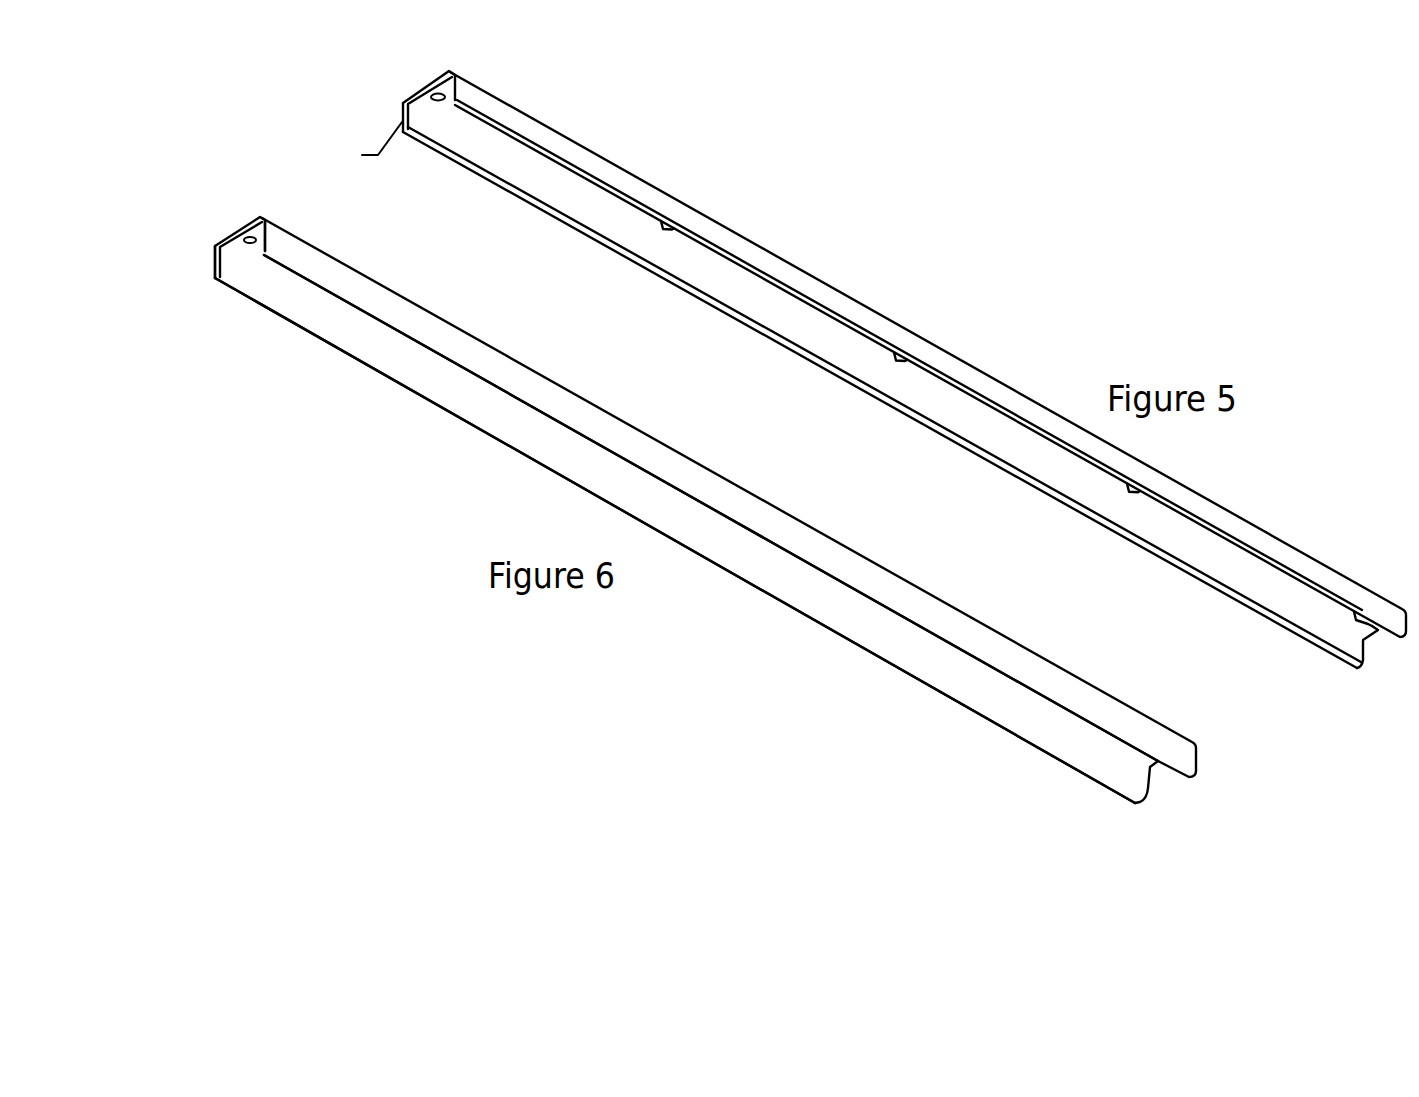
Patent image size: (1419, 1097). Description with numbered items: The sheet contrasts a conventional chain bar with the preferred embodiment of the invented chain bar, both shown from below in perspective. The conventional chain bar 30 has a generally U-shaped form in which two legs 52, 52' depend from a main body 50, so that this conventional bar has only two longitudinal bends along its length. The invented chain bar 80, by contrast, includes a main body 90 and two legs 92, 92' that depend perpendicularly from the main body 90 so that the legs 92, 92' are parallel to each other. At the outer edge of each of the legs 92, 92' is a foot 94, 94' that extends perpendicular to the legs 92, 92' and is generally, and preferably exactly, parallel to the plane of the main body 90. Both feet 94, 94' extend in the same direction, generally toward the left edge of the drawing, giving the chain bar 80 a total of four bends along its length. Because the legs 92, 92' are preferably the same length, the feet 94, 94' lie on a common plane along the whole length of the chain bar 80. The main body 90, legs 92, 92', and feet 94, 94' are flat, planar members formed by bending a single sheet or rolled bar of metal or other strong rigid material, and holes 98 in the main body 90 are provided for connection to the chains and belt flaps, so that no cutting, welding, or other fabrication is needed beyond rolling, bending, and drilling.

In FIG. 5, the conventional chain bar 30 is at (910, 310).
In FIG. 5, the main body 50 is at (422, 80).
In FIG. 5, the leg 52 is at (517, 78).
In FIG. 5, the leg 52' is at (347, 108).
In FIG. 6, the chain bar 80 is at (530, 343).
In FIG. 6, the main body 90 is at (230, 233).
In FIG. 6, the leg 92 is at (287, 202).
In FIG. 6, the leg 92' is at (184, 233).
In FIG. 6, the foot 94 is at (708, 557).
In FIG. 6, the foot 94' is at (671, 588).
In FIG. 6, the holes 98 is at (255, 218).